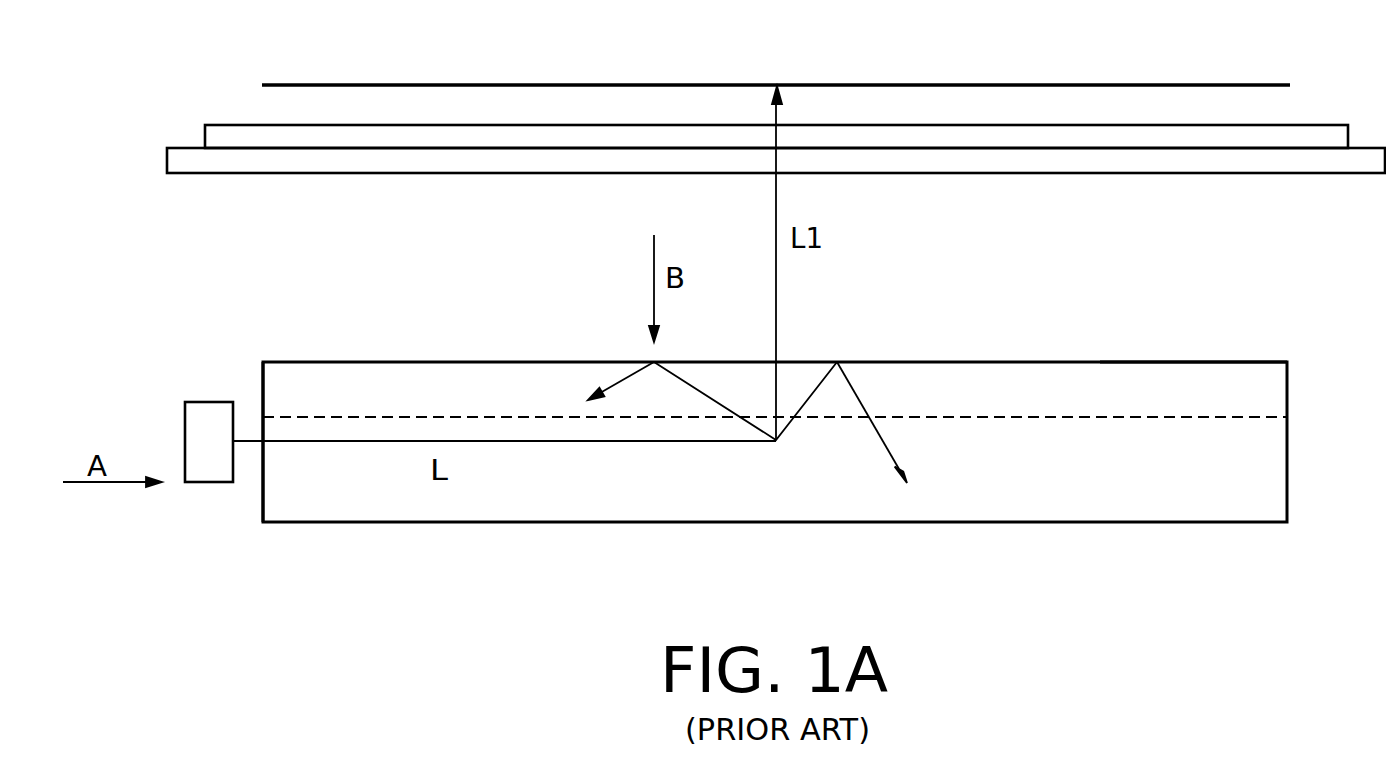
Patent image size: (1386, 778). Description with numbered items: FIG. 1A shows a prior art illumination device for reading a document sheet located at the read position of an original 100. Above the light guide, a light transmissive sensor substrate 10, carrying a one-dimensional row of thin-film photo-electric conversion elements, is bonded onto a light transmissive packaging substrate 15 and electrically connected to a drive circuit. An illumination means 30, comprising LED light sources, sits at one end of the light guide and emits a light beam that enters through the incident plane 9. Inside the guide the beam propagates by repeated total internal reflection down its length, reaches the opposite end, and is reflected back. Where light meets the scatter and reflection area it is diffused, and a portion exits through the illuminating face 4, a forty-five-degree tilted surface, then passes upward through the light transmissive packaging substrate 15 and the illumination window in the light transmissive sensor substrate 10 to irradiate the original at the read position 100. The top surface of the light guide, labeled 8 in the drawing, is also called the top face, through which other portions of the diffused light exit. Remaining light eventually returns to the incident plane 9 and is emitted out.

The read position of an original 100 is at (333, 83).
The light transmissive sensor substrate 10 is at (205, 135).
The light transmissive packaging substrate 15 is at (167, 161).
The illuminating face 4 is at (443, 370).
The light emitting surface 8 is at (1197, 363).
The incident plane 9 is at (263, 383).
The illumination means 30 is at (207, 483).